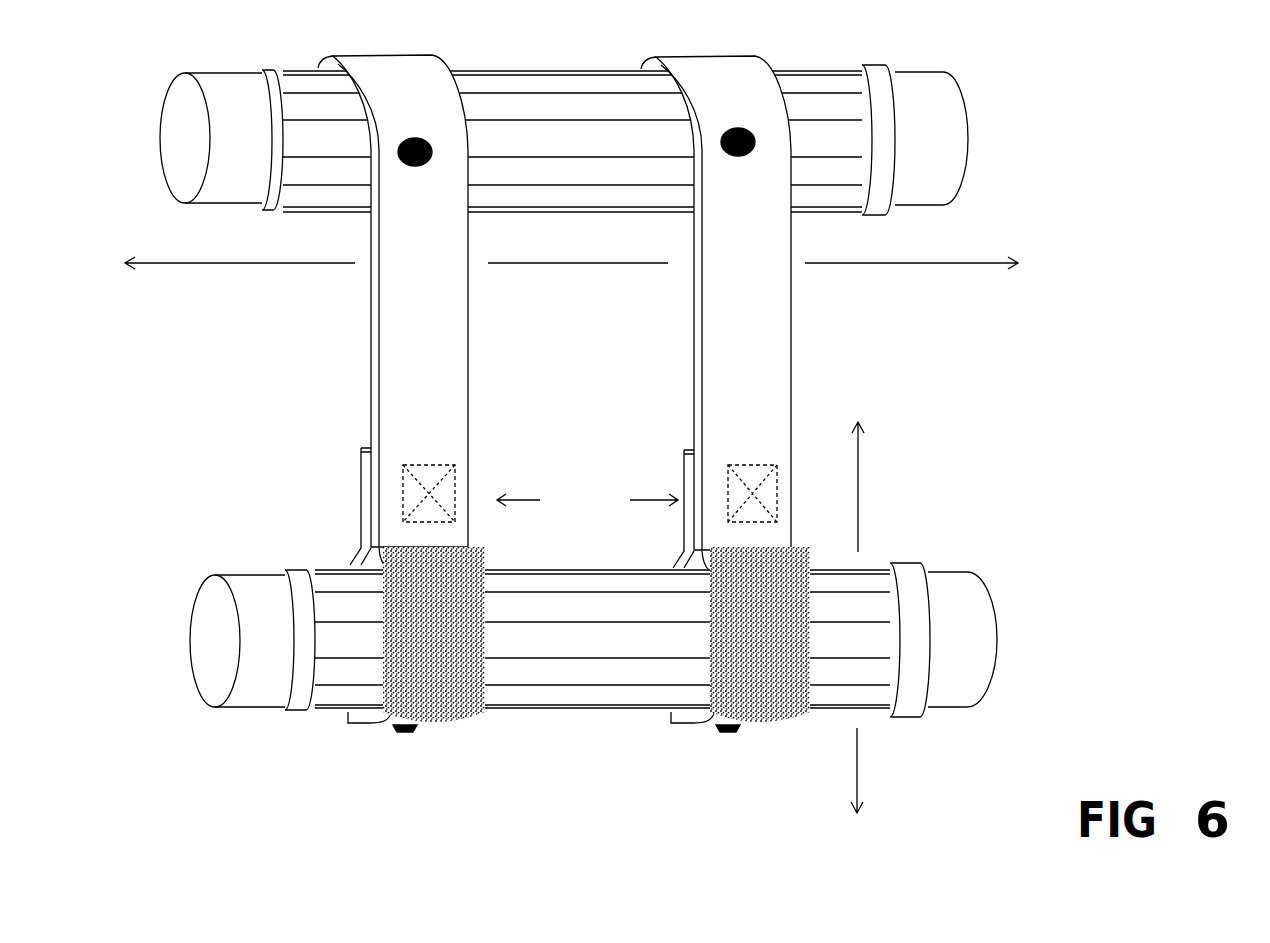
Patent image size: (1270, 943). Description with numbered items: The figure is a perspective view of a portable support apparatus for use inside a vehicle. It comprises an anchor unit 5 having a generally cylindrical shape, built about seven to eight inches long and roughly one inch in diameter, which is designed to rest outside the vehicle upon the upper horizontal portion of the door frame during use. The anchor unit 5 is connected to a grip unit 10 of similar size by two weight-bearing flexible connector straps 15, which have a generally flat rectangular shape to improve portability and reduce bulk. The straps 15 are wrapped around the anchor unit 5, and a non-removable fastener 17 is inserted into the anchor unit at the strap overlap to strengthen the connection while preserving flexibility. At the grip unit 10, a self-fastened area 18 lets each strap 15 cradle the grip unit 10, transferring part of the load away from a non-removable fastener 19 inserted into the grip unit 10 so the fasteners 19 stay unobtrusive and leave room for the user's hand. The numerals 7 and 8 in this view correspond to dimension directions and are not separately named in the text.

The anchor unit 5 is at (564, 140).
The grip unit 10 is at (593, 640).
The flexible connector strap 15 is at (564, 389).
The non-removable fastener 17 is at (420, 180).
The flexible connector strap self-fastened area 18 is at (587, 502).
The non-removable fastener 19 is at (410, 747).
The width direction 7 is at (571, 280).
The height direction 8 is at (874, 617).